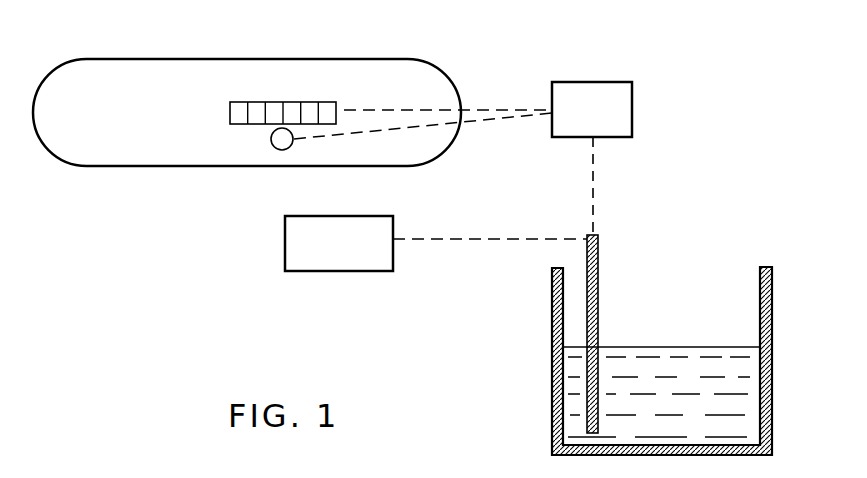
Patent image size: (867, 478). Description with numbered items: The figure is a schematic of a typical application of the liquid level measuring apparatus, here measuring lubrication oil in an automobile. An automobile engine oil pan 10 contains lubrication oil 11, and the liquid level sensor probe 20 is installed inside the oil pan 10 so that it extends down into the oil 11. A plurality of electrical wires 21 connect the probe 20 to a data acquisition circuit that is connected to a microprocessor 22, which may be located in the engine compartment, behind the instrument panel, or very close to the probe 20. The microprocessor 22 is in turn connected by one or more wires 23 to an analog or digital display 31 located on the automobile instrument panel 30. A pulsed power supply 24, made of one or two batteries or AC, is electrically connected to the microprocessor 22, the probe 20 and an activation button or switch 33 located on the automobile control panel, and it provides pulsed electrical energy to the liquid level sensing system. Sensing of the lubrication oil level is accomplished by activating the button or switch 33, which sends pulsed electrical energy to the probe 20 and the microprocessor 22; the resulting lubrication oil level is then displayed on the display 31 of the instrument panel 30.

The engine oil pan 10 is at (772, 298).
The lubrication oil 11 is at (652, 347).
The liquid level sensor probe 20 is at (598, 278).
The electrical wires 21 is at (593, 183).
The microprocessor 22 is at (633, 110).
The wires 23 is at (490, 110).
The pulsed power supply 24 is at (285, 237).
The automobile instrument panel 30 is at (213, 59).
The display 31 is at (292, 102).
The activation button or switch 33 is at (280, 151).